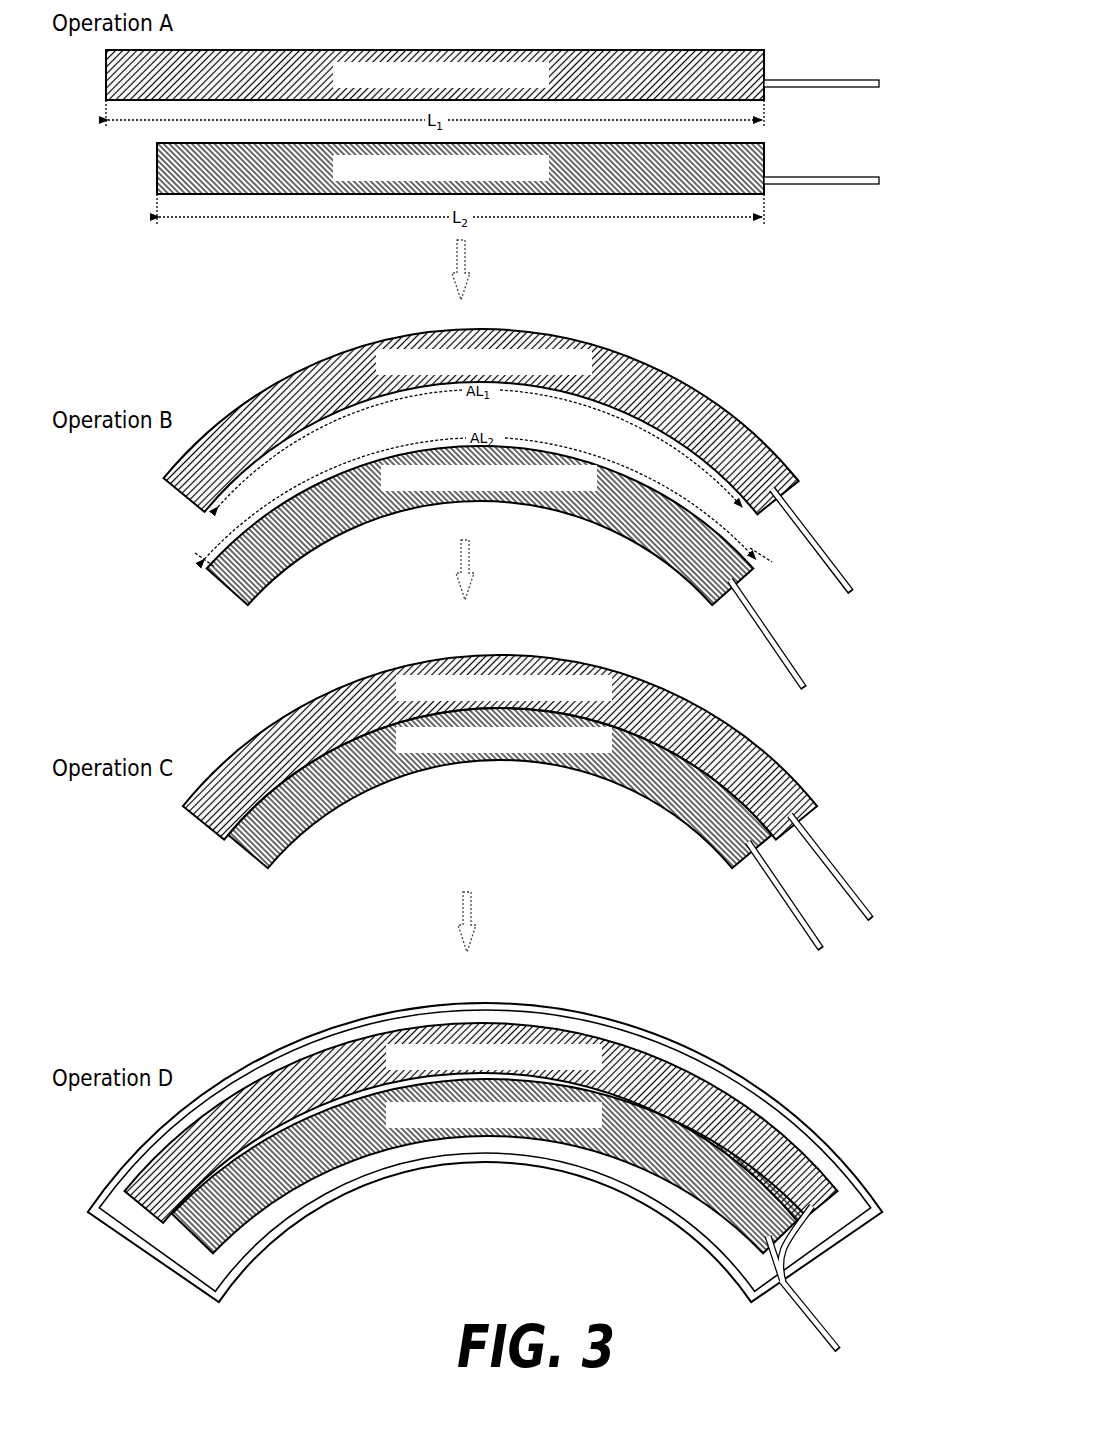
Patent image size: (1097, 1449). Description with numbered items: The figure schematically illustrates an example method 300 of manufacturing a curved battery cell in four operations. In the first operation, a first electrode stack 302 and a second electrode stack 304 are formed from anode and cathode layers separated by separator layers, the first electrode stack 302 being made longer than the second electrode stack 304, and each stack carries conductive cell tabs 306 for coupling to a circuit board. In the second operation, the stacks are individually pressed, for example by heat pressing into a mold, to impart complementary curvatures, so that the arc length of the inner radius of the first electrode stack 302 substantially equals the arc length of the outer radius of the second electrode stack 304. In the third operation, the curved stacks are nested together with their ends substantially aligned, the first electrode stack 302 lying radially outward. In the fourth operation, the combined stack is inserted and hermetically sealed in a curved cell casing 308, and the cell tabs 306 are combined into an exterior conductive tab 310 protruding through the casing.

The method of manufacturing a curved battery cell 300 is at (855, 13).
The first electrode stack 302 is at (472, 636).
The second electrode stack 304 is at (480, 698).
The conductive cell tabs 306 is at (844, 524).
The curved cell casing 308 is at (685, 1048).
The exterior conductive tab 310 is at (833, 1337).